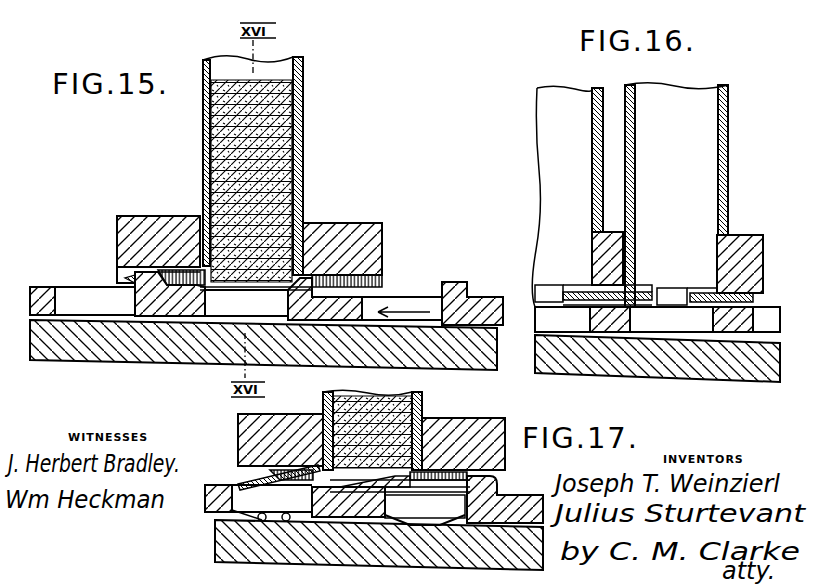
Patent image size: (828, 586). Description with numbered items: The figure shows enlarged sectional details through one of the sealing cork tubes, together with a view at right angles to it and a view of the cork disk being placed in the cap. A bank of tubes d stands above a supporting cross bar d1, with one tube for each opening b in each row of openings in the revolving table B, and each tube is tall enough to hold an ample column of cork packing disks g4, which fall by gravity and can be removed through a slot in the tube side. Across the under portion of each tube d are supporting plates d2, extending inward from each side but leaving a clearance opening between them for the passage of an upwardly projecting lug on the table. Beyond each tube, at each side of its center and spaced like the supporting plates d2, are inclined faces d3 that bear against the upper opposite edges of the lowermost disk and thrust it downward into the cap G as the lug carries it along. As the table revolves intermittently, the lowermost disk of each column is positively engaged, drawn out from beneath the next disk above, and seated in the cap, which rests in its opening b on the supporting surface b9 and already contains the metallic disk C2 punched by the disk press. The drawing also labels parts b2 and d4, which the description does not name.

In FIG. 15, the table B is at (40, 287).
In FIG. 16, the table B is at (780, 320).
In FIG. 17, the table B is at (205, 500).
In FIG. 15, the openings b is at (419, 307).
In FIG. 16, the openings b is at (672, 322).
In FIG. 15, the raised portion of bed plate b2 is at (458, 284).
In FIG. 16, the raised portion of bed plate b2 is at (671, 290).
In FIG. 17, the raised portion of bed plate b2 is at (500, 478).
In FIG. 16, the supporting surface b9 is at (610, 375).
In FIG. 17, the supporting surface b9 is at (215, 540).
In FIG. 15, the tubes d is at (303, 143).
In FIG. 16, the tubes d is at (728, 165).
In FIG. 15, the supporting cross bar d1 is at (382, 243).
In FIG. 16, the supporting cross bar d1 is at (763, 262).
In FIG. 15, the supporting plates d2 is at (252, 284).
In FIG. 16, the supporting plates d2 is at (774, 293).
In FIG. 17, the supporting plates d2 is at (425, 490).
In FIG. 15, the inclined faces d3 is at (128, 282).
In FIG. 17, the inclined faces d3 is at (245, 478).
In FIG. 17, the block d4 is at (238, 428).
In FIG. 15, the cork packing disks g4 is at (298, 215).
In FIG. 17, the cork packing disks g4 is at (400, 394).
In FIG. 17, the cap G is at (303, 518).
In FIG. 17, the metallic disks C2 is at (252, 502).